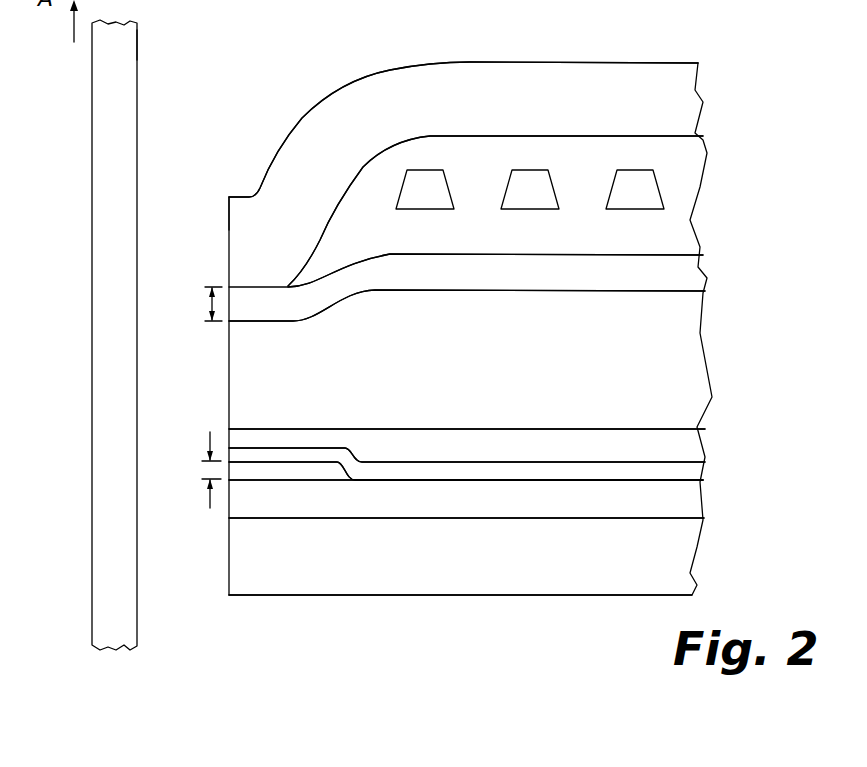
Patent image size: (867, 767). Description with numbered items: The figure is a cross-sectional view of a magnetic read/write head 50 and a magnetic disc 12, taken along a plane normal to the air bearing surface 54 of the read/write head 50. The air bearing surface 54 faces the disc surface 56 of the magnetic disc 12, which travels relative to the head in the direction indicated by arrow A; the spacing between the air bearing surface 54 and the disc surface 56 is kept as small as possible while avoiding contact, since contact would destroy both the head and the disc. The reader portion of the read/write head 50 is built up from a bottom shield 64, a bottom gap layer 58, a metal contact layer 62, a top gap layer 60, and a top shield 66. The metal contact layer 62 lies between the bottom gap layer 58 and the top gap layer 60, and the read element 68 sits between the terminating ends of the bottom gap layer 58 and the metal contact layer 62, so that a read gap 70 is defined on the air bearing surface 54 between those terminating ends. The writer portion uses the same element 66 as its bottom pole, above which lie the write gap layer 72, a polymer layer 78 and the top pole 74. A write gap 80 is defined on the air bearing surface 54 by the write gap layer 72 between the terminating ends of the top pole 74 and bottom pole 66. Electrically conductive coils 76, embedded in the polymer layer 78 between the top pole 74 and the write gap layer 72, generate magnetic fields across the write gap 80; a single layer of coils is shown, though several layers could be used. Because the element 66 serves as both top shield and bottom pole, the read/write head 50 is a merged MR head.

The magnetic disc 12 is at (123, 106).
The magnetic read/write head 50 is at (716, 67).
The air bearing surface 54 is at (229, 212).
The disc surface 56 is at (137, 42).
The bottom gap layer 58 is at (597, 515).
The top gap layer 60 is at (600, 462).
The metal contact layer 62 is at (683, 471).
The bottom shield 64 is at (603, 572).
The top shield / bottom pole 66 is at (603, 385).
The read element 68 is at (272, 470).
The read gap 70 is at (194, 501).
The write gap layer 72 is at (601, 287).
The top pole 74 is at (643, 112).
The conductive coil 76 is at (438, 202).
The polymer layer 78 is at (601, 250).
The write gap 80 is at (194, 304).